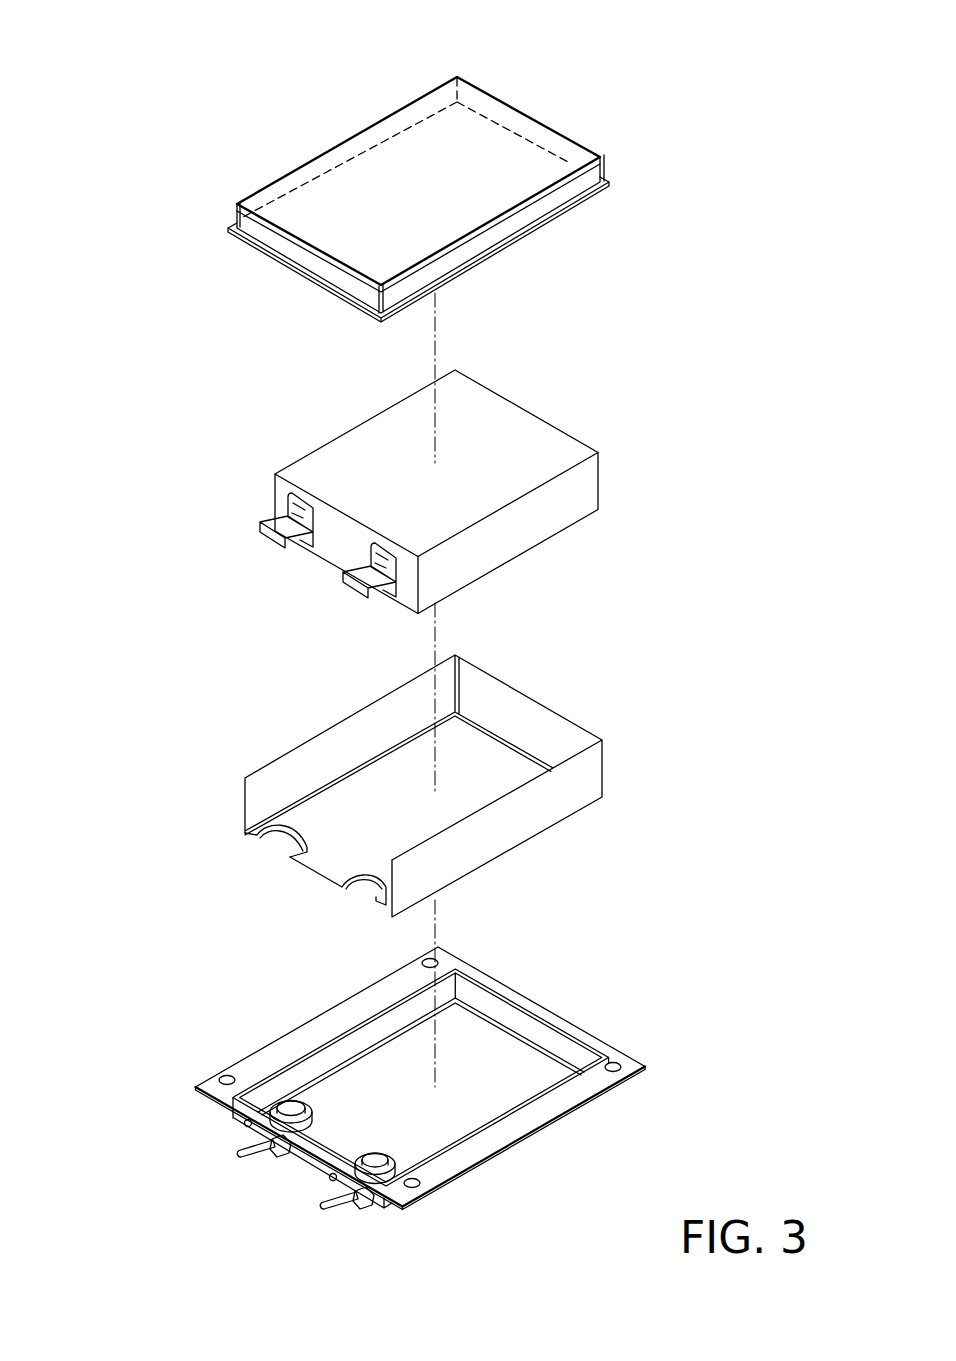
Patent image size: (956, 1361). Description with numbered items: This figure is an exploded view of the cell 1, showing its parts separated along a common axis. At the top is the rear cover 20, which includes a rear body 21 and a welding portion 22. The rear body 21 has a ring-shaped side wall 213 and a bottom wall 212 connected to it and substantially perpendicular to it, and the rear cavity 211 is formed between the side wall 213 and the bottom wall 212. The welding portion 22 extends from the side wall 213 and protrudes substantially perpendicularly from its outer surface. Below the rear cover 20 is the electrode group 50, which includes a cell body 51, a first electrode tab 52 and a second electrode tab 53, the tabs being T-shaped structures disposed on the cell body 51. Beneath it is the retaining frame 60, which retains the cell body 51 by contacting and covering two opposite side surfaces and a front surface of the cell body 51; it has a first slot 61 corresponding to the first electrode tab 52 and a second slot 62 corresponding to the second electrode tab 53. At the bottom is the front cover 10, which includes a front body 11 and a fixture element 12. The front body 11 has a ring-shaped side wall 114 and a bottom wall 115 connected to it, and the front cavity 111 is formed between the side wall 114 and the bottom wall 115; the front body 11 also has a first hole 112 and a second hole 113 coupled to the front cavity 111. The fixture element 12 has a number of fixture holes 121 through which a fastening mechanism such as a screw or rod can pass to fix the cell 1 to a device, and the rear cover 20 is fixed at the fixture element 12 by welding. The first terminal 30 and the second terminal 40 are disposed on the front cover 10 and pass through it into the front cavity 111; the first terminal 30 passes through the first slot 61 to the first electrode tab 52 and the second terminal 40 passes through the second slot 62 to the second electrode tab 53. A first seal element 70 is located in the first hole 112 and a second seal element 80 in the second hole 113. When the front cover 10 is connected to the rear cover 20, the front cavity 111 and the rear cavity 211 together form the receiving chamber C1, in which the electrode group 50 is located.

The cell 1 is at (770, 34).
The front cover 10 is at (423, 1059).
The front body 11 is at (576, 1020).
The front cavity 111 is at (398, 1125).
The first hole 112 is at (277, 1097).
The second hole 113 is at (415, 1194).
The side wall 114 is at (487, 1002).
The bottom wall 115 is at (510, 1065).
The fixture element 12 is at (532, 1110).
The fixture hole 121 is at (614, 1060).
The rear cover 20 is at (448, 173).
The rear body 21 is at (533, 117).
The rear cavity 211 is at (350, 200).
The bottom wall 212 is at (397, 125).
The side wall 213 is at (566, 201).
The welding portion 22 is at (616, 184).
The first terminal 30 is at (238, 1153).
The second terminal 40 is at (322, 1205).
The electrode group 50 is at (424, 488).
The cell body 51 is at (529, 408).
The first electrode tab 52 is at (273, 538).
The second electrode tab 53 is at (357, 586).
The retaining frame 60 is at (426, 791).
The first slot 61 is at (283, 846).
The second slot 62 is at (365, 877).
The first seal element 70 is at (268, 1148).
The second seal element 80 is at (355, 1200).
The receiving chamber C1 is at (135, 86).